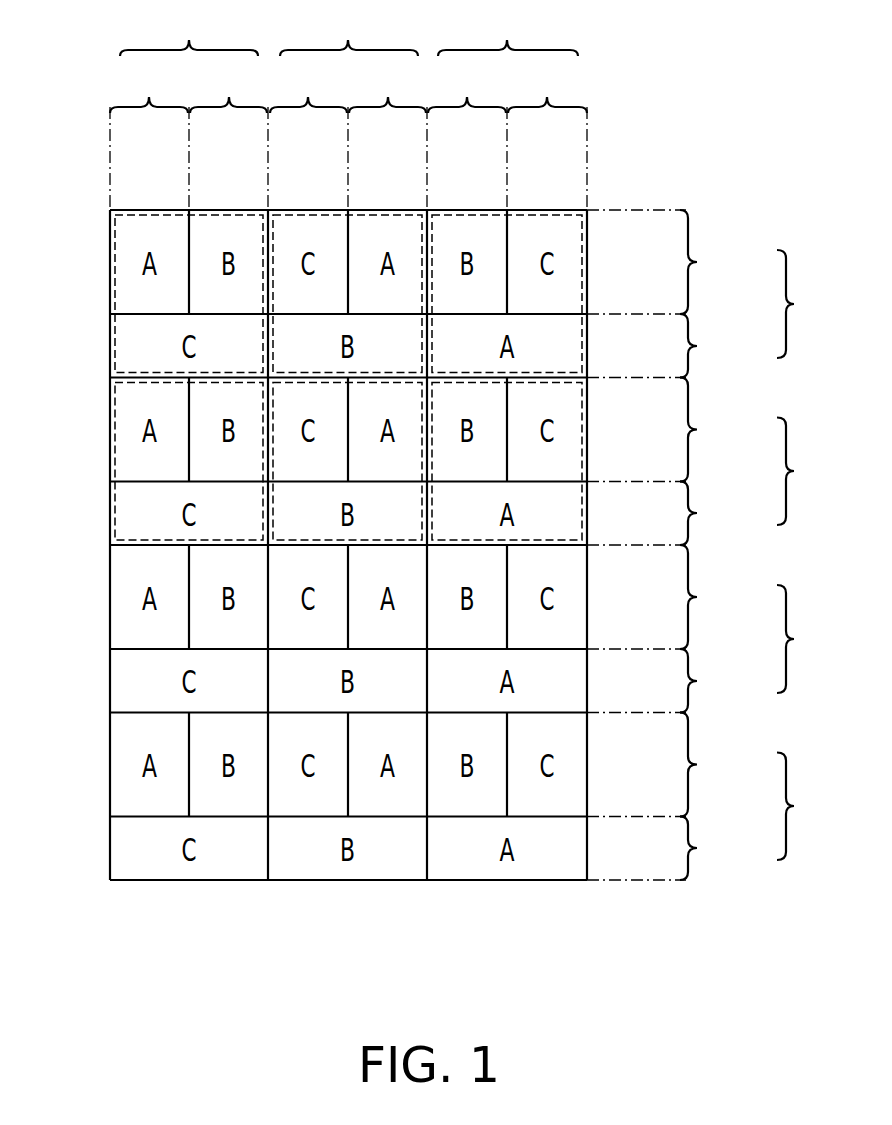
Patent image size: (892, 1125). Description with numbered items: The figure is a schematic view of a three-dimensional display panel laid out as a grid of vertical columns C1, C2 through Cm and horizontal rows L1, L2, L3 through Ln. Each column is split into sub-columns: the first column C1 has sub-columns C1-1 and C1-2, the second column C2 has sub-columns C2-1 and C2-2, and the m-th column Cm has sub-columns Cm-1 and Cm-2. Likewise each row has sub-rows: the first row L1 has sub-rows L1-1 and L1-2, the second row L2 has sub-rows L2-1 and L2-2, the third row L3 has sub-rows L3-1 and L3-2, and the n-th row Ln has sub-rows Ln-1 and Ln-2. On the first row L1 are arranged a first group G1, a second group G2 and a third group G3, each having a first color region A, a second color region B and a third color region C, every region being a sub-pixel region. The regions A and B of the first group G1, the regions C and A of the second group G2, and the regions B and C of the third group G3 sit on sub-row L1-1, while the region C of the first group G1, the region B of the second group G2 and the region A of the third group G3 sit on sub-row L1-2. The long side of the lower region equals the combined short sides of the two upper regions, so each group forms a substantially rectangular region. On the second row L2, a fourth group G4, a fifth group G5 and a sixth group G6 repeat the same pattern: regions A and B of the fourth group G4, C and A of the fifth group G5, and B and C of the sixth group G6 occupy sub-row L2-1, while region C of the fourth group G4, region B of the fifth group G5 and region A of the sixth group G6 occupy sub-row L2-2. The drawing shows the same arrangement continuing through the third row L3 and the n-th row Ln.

The first group G1 is at (110, 281).
The second group G2 is at (398, 212).
The third group G3 is at (590, 281).
The fourth group G4 is at (110, 441).
The fifth group G5 is at (310, 545).
The sixth group G6 is at (590, 441).
The first column C1 is at (189, 30).
The second column C2 is at (349, 30).
The m-th column Cm is at (508, 30).
The sub-column C1-1 is at (149, 87).
The sub-column C1-2 is at (228, 87).
The sub-column C2-1 is at (308, 87).
The sub-column C2-2 is at (387, 87).
The sub-column Cm-1 is at (467, 87).
The sub-column Cm-2 is at (547, 87).
The first row L1 is at (800, 304).
The second row L2 is at (800, 472).
The third row L3 is at (800, 639).
The n-th row Ln is at (801, 807).
The sub-row L1-1 is at (720, 262).
The sub-row L1-2 is at (720, 346).
The sub-row L2-1 is at (720, 430).
The sub-row L2-2 is at (720, 514).
The sub-row L3-1 is at (720, 597).
The sub-row L3-2 is at (720, 681).
The sub-row Ln-1 is at (720, 765).
The sub-row Ln-2 is at (720, 849).